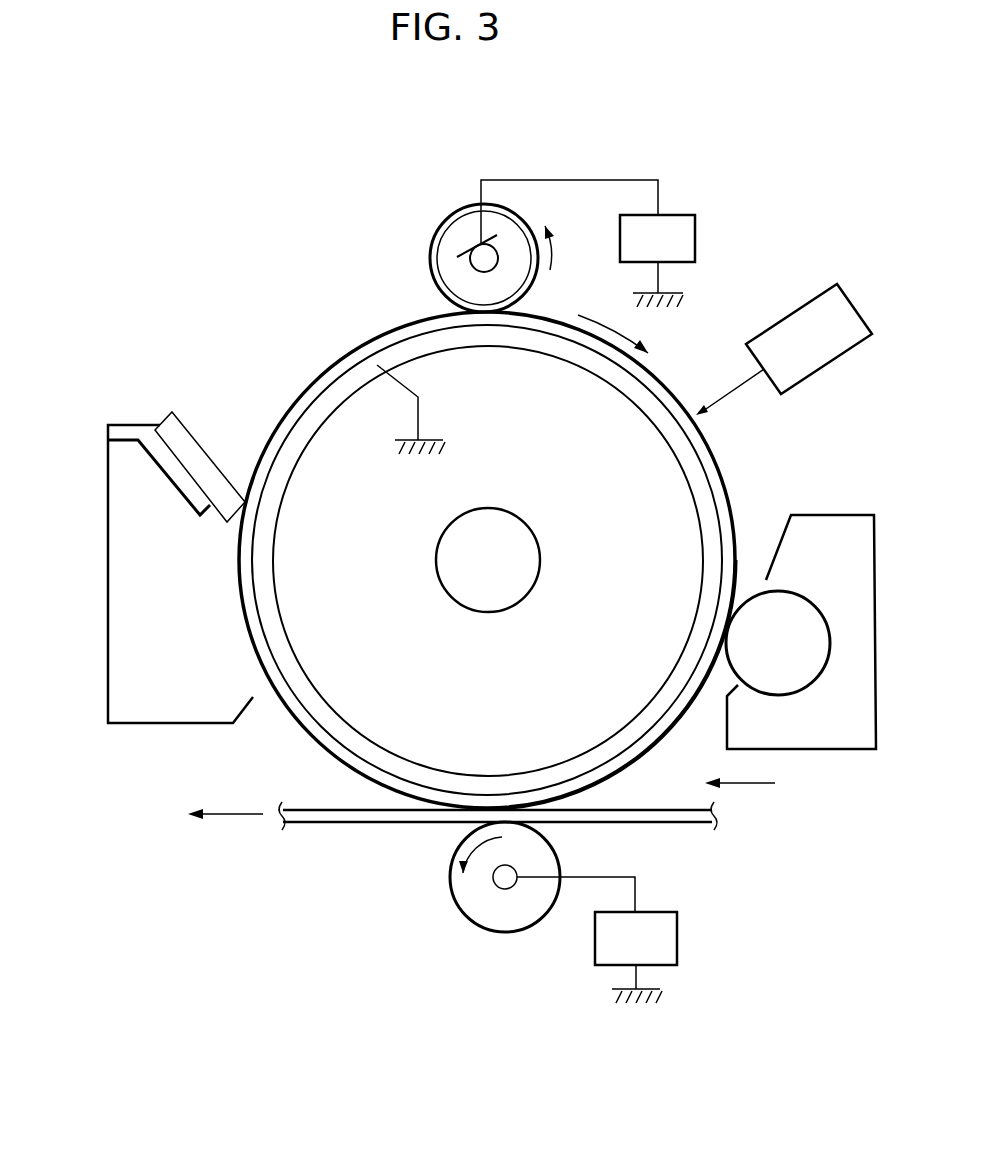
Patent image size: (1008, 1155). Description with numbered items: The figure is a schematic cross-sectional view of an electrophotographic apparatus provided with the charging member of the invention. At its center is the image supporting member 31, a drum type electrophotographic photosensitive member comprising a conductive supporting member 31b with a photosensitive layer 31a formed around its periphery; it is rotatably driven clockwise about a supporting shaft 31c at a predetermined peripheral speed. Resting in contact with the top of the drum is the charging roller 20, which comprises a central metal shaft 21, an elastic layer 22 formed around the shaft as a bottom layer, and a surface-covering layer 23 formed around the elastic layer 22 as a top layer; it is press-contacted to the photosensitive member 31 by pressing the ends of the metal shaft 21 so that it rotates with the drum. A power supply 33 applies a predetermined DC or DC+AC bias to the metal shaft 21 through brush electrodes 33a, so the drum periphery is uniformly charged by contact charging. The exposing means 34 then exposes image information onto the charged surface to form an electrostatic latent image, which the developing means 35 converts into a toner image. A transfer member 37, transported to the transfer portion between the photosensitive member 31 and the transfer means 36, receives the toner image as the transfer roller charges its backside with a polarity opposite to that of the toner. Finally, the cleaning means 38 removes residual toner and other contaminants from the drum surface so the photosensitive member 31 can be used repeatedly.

The charging roller 20 is at (416, 251).
The metal shaft 21 is at (475, 265).
The elastic layer 22 is at (455, 247).
The surface-covering layer 23 is at (438, 228).
The image supporting member 31 is at (447, 557).
The photosensitive layer 31a is at (332, 367).
The conductive supporting member 31b is at (325, 413).
The supporting shaft 31c is at (498, 603).
The power supply 33 is at (588, 243).
The brush electrodes 33a is at (480, 243).
The exposing means 34 is at (784, 349).
The developing means 35 is at (820, 541).
The transfer means 36 is at (478, 910).
The transfer member 37 is at (335, 825).
The cleaning means 38 is at (132, 593).